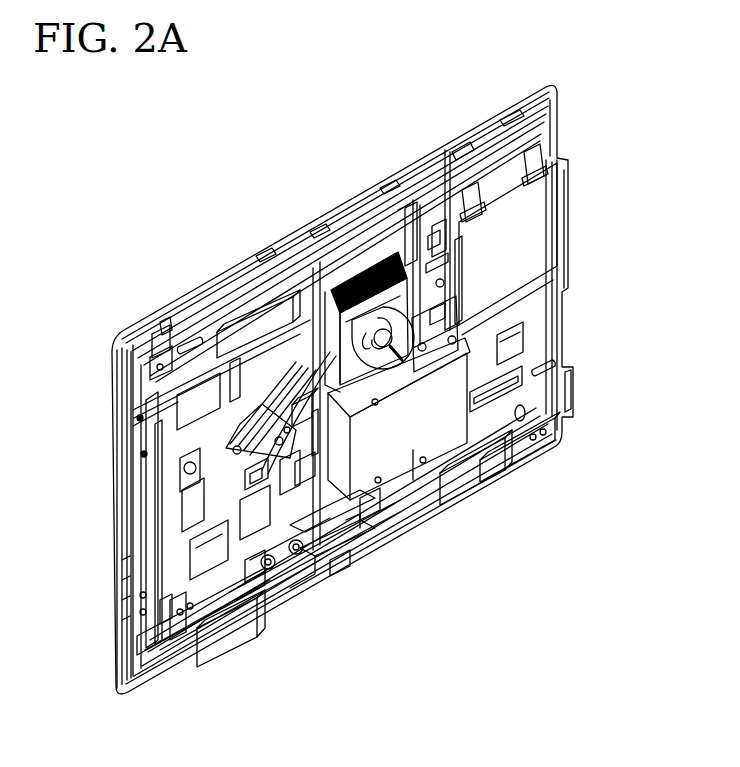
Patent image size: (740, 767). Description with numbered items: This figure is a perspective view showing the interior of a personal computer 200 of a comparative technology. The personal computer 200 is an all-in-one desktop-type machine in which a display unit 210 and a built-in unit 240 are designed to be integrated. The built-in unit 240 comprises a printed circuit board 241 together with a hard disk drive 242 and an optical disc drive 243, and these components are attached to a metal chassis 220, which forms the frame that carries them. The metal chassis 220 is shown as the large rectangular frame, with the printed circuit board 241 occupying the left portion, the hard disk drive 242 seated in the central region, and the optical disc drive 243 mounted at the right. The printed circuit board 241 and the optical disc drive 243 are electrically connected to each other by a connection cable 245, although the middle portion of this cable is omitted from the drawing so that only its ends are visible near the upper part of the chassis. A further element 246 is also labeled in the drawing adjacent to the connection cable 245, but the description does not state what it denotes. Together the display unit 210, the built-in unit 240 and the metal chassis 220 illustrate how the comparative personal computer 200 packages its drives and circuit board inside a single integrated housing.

The personal computer 200 is at (138, 266).
The display unit 210 is at (263, 248).
The metal chassis 220 is at (557, 332).
The built-in unit 240 is at (588, 622).
The printed circuit board 241 is at (340, 572).
The hard disk drive 242 is at (417, 452).
The optical disc drive 243 is at (507, 280).
The connection cable 245 is at (440, 240).
The wireless module 246 is at (443, 240).